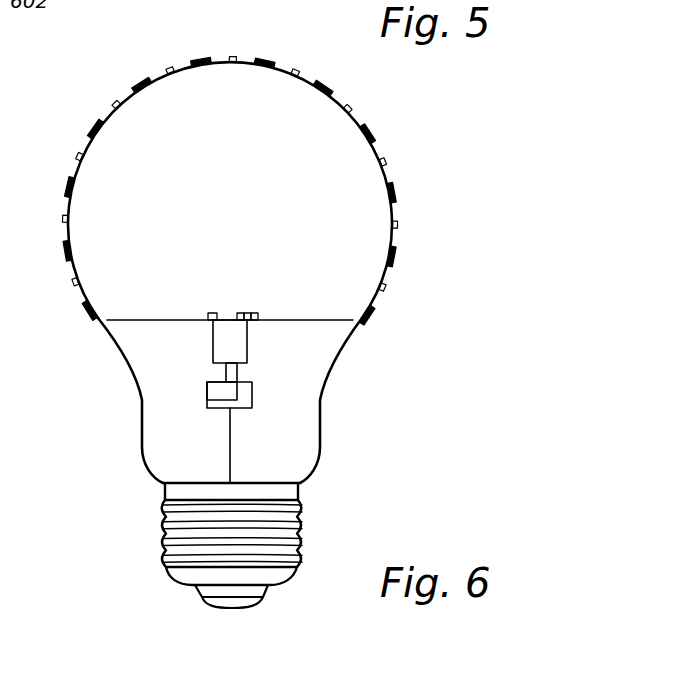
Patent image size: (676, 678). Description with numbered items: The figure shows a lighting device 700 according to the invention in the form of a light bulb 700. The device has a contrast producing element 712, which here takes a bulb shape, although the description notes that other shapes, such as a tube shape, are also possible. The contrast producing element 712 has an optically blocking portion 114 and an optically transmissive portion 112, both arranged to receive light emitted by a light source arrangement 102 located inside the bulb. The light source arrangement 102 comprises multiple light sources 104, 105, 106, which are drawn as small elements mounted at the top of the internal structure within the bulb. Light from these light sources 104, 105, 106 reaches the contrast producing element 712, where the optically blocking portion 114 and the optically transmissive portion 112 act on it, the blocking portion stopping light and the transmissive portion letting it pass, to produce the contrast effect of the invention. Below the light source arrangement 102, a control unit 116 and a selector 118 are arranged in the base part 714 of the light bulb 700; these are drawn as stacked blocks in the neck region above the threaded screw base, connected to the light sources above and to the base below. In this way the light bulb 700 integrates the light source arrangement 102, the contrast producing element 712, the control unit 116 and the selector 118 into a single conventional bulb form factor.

The light source arrangement 102 is at (240, 334).
The light source 104 is at (260, 315).
The light source 105 is at (247, 313).
The light source 106 is at (237, 313).
The optically transmissive portion 112 is at (218, 58).
The optically blocking portion 114 is at (200, 58).
The control unit 116 is at (243, 406).
The selector 118 is at (207, 390).
The lighting device 700 is at (345, 306).
The contrast producing element 712 is at (267, 164).
The base part 714 is at (324, 412).